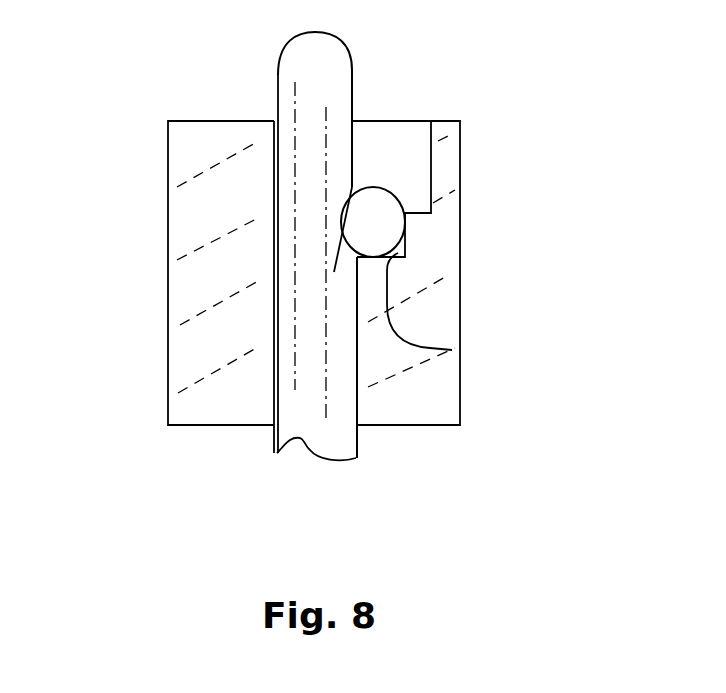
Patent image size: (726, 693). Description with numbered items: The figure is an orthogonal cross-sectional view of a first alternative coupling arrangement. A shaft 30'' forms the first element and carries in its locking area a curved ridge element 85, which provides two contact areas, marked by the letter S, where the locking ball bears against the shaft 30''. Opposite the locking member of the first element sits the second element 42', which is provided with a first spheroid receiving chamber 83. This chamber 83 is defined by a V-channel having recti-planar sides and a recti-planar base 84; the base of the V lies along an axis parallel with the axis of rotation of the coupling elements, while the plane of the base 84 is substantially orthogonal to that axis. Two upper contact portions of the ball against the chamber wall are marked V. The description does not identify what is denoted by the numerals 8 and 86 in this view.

The plate 8 is at (357, 264).
The second element 42' is at (445, 260).
The guide recess 86 is at (393, 145).
The first spheroid receiving chamber 83 is at (405, 247).
The recti-planar base 84 is at (440, 350).
The curved ridge element 85 is at (352, 192).
The shaft 30'' is at (273, 294).